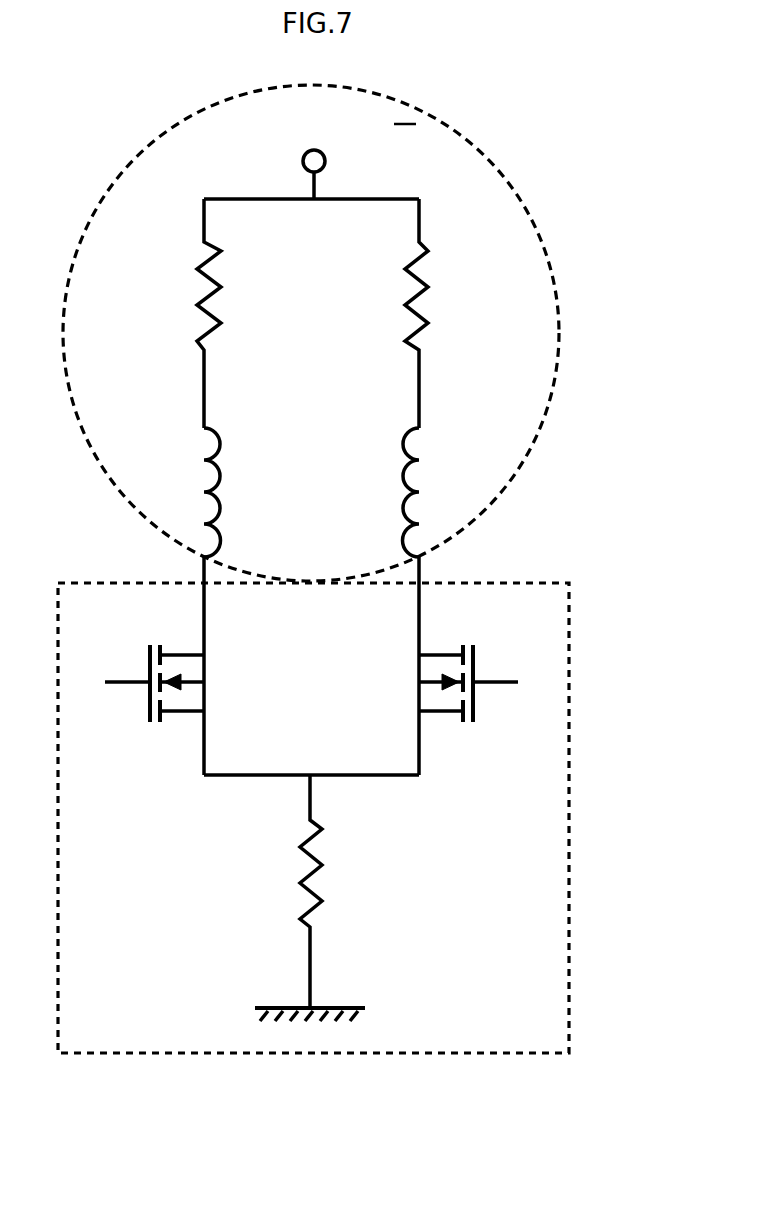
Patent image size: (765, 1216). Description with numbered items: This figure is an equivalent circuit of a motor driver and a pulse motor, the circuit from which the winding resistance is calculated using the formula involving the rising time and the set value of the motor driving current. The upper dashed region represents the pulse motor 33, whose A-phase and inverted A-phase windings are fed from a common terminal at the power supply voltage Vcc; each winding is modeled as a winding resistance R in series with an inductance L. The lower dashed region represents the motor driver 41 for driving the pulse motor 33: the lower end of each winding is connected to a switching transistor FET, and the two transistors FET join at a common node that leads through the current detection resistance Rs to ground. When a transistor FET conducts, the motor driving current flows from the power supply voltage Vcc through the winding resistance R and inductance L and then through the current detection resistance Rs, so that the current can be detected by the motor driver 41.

The pulse motor 33 is at (553, 390).
The motor driver 41 is at (571, 597).
The winding resistance R is at (312, 313).
The winding inductance L is at (311, 492).
The field effect transistor FET is at (311, 672).
The current detection resistance Rs is at (336, 891).
The power supply voltage Vcc is at (313, 159).